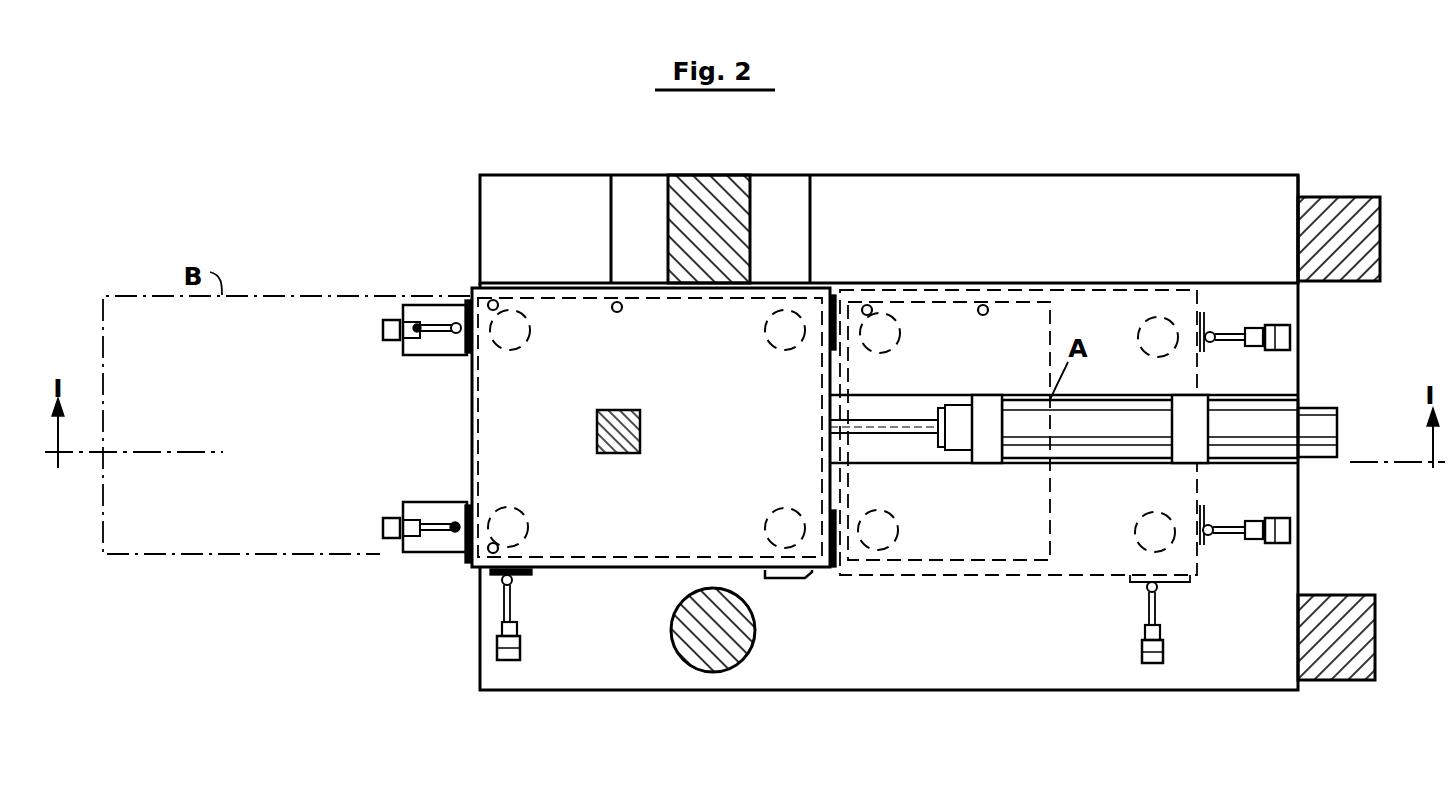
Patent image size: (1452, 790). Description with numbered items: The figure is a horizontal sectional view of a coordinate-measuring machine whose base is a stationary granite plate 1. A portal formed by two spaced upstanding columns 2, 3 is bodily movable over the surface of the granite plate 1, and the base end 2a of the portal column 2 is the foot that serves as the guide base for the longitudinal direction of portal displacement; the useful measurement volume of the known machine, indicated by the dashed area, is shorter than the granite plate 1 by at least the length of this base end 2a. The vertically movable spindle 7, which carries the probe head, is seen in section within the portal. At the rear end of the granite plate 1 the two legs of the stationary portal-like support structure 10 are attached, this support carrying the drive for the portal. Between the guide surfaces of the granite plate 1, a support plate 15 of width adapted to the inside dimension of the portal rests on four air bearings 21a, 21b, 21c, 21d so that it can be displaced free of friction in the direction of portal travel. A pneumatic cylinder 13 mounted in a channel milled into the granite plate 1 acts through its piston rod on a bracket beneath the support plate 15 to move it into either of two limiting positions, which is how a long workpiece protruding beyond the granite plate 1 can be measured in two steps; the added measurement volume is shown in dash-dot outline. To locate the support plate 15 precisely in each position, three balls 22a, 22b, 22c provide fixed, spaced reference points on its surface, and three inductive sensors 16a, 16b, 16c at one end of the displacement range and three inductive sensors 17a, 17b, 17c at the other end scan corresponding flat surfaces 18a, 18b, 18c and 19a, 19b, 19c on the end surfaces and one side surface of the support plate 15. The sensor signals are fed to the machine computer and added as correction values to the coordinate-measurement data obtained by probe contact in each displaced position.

The granite plate 1 is at (1248, 655).
The portal column 2 is at (727, 200).
The base end of portal column 2a is at (785, 203).
The portal column 3 is at (706, 640).
The spindle 7 is at (597, 430).
The support structure 10 is at (1330, 192).
The pneumatic cylinder 13 is at (1328, 430).
The support plate 15 is at (497, 423).
The inductive sensor 16a is at (410, 305).
The inductive sensor 16b is at (397, 553).
The inductive sensor 16c is at (514, 660).
The inductive sensor 17a is at (1292, 338).
The inductive sensor 17b is at (1300, 530).
The inductive sensor 17c is at (1153, 664).
The flat surface 18a is at (470, 300).
The flat surface 18b is at (465, 563).
The flat surface 18c is at (530, 578).
The flat surface 19a is at (834, 298).
The flat surface 19b is at (835, 578).
The flat surface 19c is at (790, 582).
The air bearing 21a is at (530, 332).
The air bearing 21b is at (768, 327).
The air bearing 21c is at (528, 522).
The air bearing 21d is at (770, 536).
The ball 22a is at (494, 299).
The ball 22b is at (493, 542).
The ball 22c is at (618, 300).